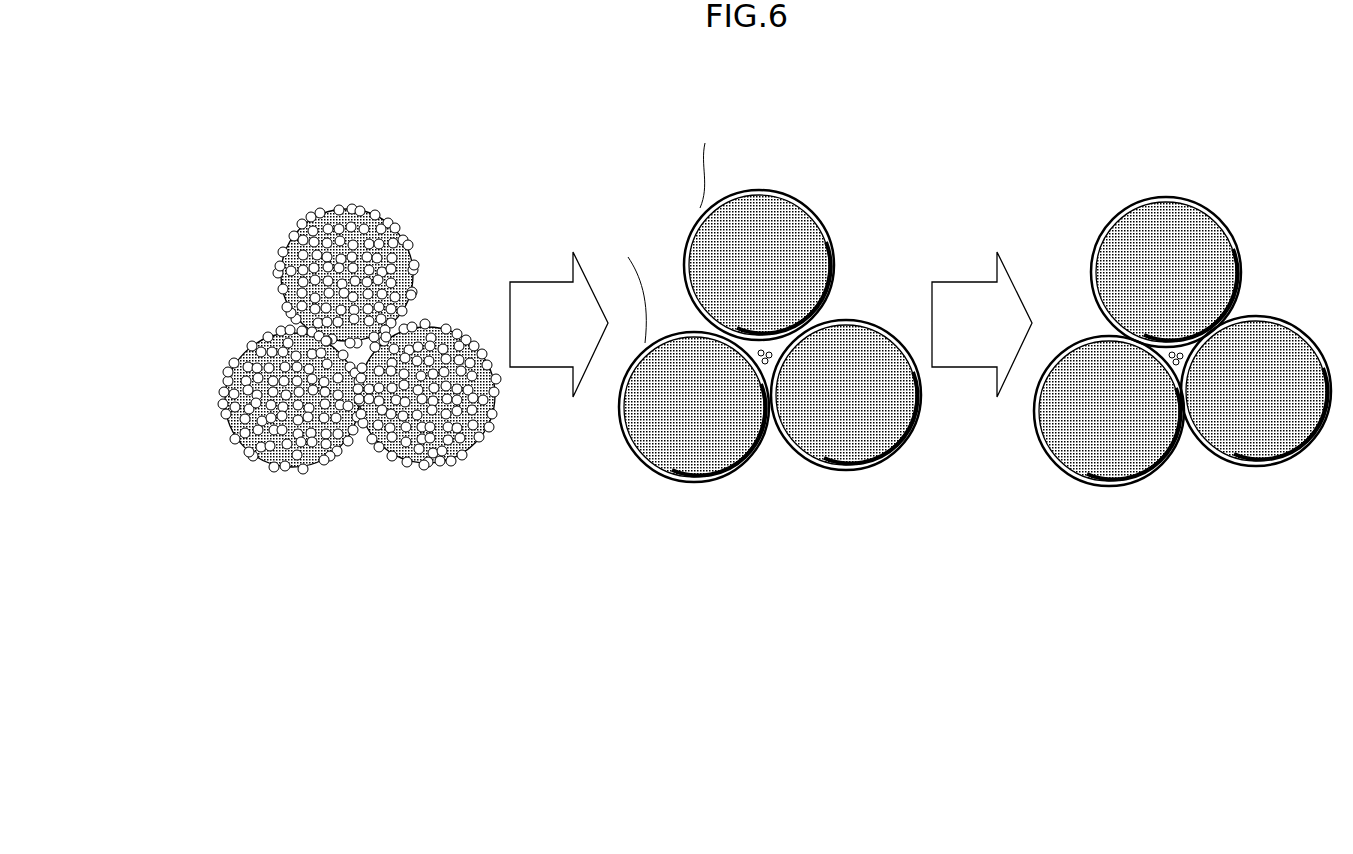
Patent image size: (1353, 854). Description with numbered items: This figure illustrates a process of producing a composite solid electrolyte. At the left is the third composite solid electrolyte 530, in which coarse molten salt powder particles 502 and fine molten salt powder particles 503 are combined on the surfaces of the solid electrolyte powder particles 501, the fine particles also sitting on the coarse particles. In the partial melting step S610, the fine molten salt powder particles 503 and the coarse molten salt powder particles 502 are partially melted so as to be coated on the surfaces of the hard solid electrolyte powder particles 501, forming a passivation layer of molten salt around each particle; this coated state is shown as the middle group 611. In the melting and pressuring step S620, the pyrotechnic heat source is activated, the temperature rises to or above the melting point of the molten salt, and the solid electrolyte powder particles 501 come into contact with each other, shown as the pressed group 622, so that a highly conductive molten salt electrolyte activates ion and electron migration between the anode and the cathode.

The solid electrolyte powder particles 501 is at (218, 376).
The coarse molten salt powder particles 502 is at (272, 274).
The fine molten salt powder particles 503 is at (318, 210).
The third composite solid electrolyte 530 is at (319, 276).
The partially melted solid electrolyte with molten salt coating 611 is at (781, 187).
The pressed solid electrolyte layer 622 is at (1173, 189).
The partial melting step S610 is at (543, 280).
The heat source activation step S620 is at (967, 280).